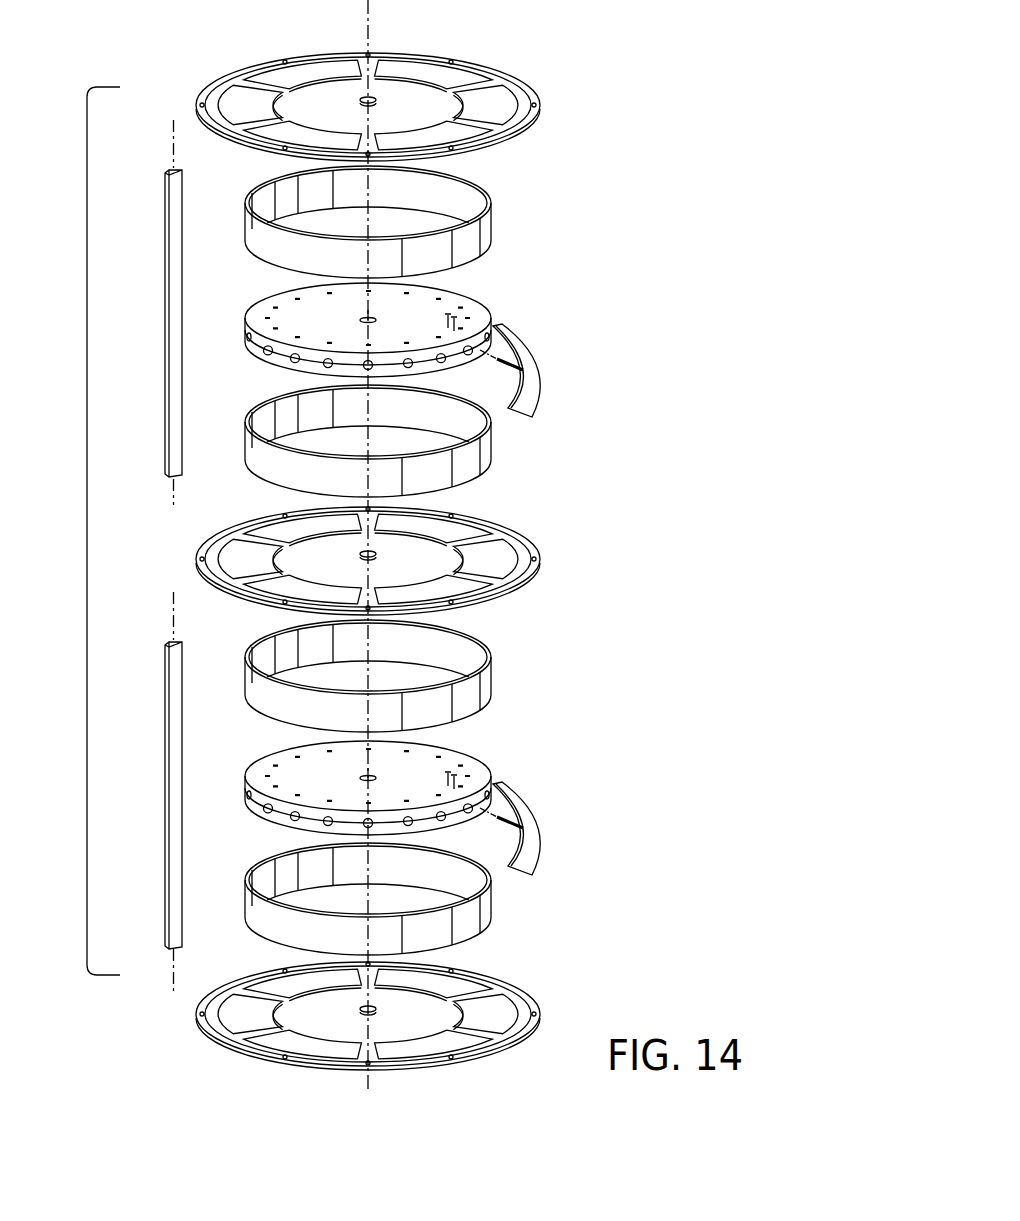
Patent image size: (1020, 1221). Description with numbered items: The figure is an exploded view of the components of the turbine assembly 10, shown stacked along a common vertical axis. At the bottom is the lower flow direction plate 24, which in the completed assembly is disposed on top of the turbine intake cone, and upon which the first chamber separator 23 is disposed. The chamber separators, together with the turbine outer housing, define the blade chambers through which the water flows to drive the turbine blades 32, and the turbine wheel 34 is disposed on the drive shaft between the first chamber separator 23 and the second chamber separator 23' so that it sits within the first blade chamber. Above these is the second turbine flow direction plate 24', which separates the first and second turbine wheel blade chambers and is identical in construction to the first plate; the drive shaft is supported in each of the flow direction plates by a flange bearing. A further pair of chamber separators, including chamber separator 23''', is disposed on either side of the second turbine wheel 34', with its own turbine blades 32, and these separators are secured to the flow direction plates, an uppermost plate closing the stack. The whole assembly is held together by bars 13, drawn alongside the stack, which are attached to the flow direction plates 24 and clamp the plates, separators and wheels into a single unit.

The turbine assembly 10 is at (87, 533).
The bars 13 is at (165, 345).
The first chamber separator 23 is at (434, 899).
The second chamber separator 23' is at (443, 676).
The chamber separator 23''' is at (454, 203).
The lower flow direction plate 24 is at (423, 1006).
The second turbine flow direction plate 24' is at (437, 555).
The turbine blades 32 is at (543, 827).
The turbine wheel 34 is at (431, 767).
The second turbine wheel 34' is at (445, 309).